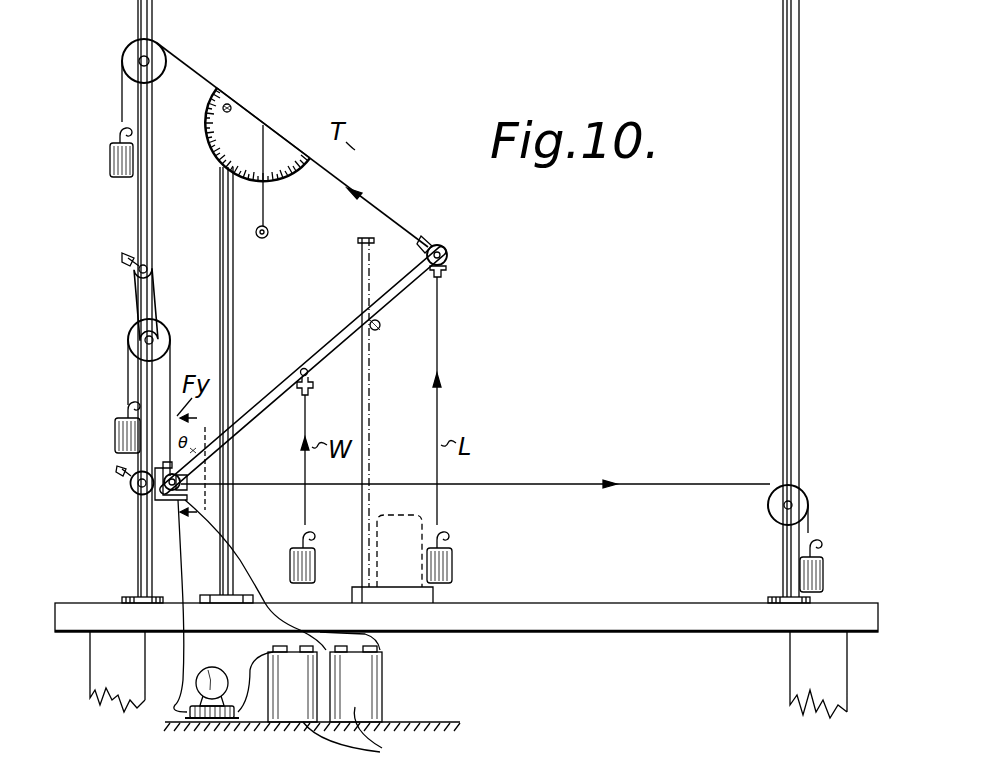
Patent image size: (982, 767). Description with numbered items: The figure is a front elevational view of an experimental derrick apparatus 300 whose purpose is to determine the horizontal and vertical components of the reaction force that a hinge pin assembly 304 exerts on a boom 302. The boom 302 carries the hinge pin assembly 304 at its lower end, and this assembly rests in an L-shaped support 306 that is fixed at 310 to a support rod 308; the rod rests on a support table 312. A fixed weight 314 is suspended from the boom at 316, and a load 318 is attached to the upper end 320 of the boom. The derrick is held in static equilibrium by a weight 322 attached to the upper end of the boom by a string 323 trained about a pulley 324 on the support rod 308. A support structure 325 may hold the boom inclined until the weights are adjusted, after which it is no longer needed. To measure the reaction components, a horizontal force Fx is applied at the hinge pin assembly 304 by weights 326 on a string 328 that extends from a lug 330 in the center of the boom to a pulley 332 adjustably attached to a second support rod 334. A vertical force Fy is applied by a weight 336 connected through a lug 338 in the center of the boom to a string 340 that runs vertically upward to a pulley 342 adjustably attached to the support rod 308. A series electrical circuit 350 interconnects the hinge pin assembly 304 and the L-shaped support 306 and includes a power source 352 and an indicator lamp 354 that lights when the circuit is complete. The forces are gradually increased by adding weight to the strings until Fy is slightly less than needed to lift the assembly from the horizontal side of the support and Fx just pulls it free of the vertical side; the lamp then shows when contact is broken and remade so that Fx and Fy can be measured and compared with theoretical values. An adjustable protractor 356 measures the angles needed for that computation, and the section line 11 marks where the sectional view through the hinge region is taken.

The force measuring apparatus 300 is at (418, 216).
The rod 302 is at (330, 345).
The bracket 304 is at (168, 502).
The pivot 306 is at (165, 490).
The left post 308 is at (147, 550).
The pulley 310 is at (130, 486).
The base board 312 is at (565, 618).
The weight 314 is at (310, 570).
The hanger 316 is at (302, 366).
The weight 318 is at (442, 570).
The upper pivot 320 is at (448, 255).
The weight 322 is at (110, 160).
The protractor 323 is at (215, 82).
The top pulley 324 is at (150, 52).
The phantom post 325 is at (365, 448).
The weight 326 is at (822, 570).
The horizontal string 328 is at (580, 486).
The second post 330 is at (247, 385).
The right pulley 332 is at (795, 500).
The right post 334 is at (795, 403).
The weight 336 is at (115, 435).
The strain gauge 338 is at (166, 462).
The pulley 340 is at (173, 370).
The link 342 is at (160, 327).
The wires 350 is at (180, 677).
The batteries 352 is at (350, 706).
The lamp 354 is at (210, 720).
The plumb line 356 is at (243, 143).
The section line 11 is at (205, 467).